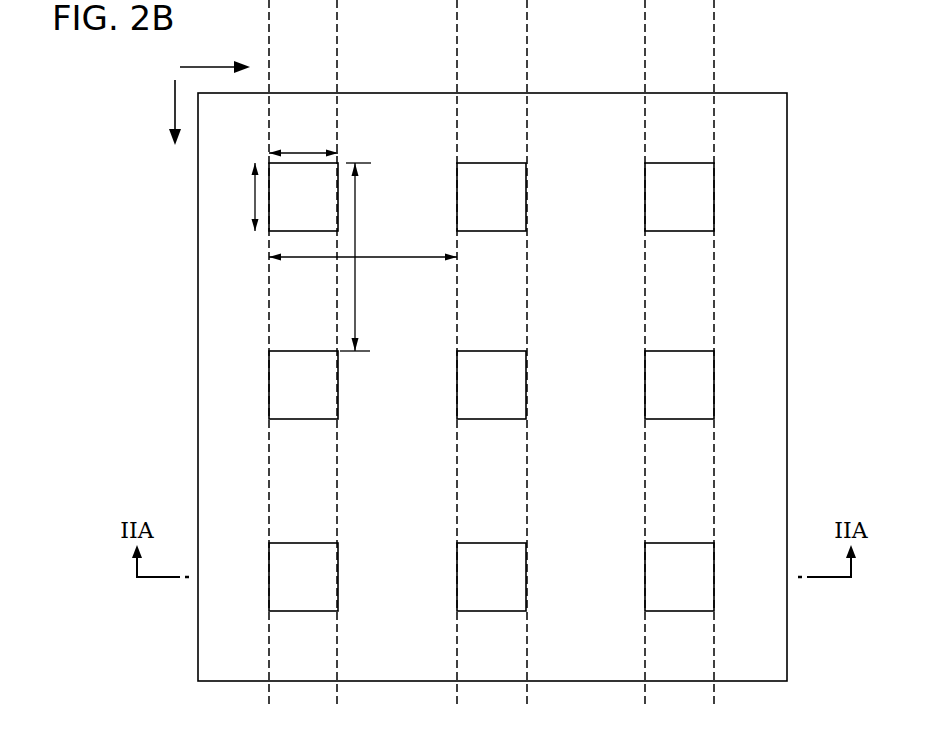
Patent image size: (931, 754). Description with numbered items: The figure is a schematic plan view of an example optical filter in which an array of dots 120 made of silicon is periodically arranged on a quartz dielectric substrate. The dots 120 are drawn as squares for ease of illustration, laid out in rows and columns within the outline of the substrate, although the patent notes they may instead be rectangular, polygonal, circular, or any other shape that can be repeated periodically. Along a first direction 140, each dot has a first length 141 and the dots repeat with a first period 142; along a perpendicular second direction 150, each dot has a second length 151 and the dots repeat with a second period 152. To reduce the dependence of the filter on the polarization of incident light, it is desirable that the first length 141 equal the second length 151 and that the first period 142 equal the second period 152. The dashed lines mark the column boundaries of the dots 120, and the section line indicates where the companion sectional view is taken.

The dots 120 is at (332, 176).
The first direction 140 is at (215, 55).
The second direction 150 is at (159, 112).
The first length 141 is at (303, 139).
The second length 151 is at (237, 197).
The first period 142 is at (363, 247).
The second period 152 is at (365, 257).